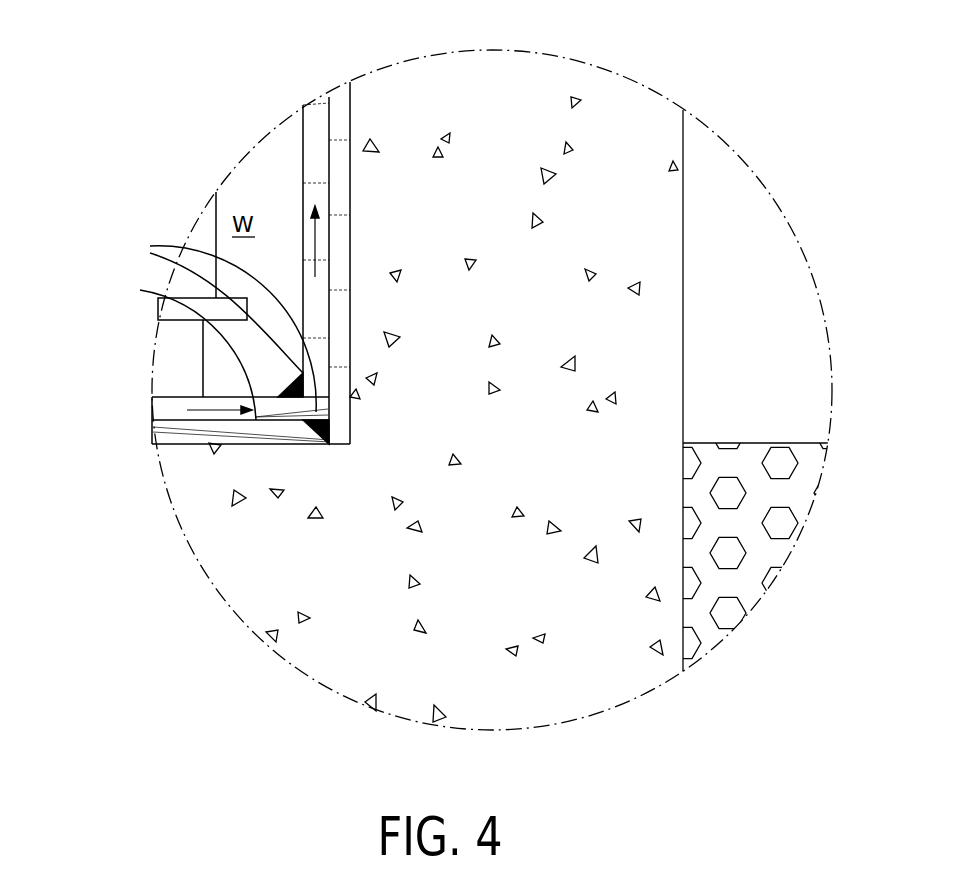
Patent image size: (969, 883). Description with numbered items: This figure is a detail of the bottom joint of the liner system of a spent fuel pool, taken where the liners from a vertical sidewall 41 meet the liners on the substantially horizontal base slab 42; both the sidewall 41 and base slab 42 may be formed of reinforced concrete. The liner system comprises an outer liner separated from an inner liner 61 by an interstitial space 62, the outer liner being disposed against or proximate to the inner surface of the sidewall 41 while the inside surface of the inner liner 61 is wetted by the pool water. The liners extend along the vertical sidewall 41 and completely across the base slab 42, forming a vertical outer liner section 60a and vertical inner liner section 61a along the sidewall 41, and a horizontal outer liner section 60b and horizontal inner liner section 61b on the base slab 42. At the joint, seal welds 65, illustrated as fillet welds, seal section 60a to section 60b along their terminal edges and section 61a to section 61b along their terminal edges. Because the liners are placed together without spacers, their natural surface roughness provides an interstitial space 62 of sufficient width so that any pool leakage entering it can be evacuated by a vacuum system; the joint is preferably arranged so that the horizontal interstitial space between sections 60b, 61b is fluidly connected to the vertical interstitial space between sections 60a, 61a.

The vertical sidewall 41 is at (508, 310).
The base slab 42 is at (340, 560).
The inner liner 61 is at (378, 415).
The vertical section of outer liner 60a is at (340, 125).
The horizontal section of outer liner 60b is at (167, 433).
The vertical section of inner liner 61a is at (313, 122).
The horizontal section of inner liner 61b is at (173, 410).
The interstitial space 62 is at (325, 150).
The seal weld 65 is at (216, 326).